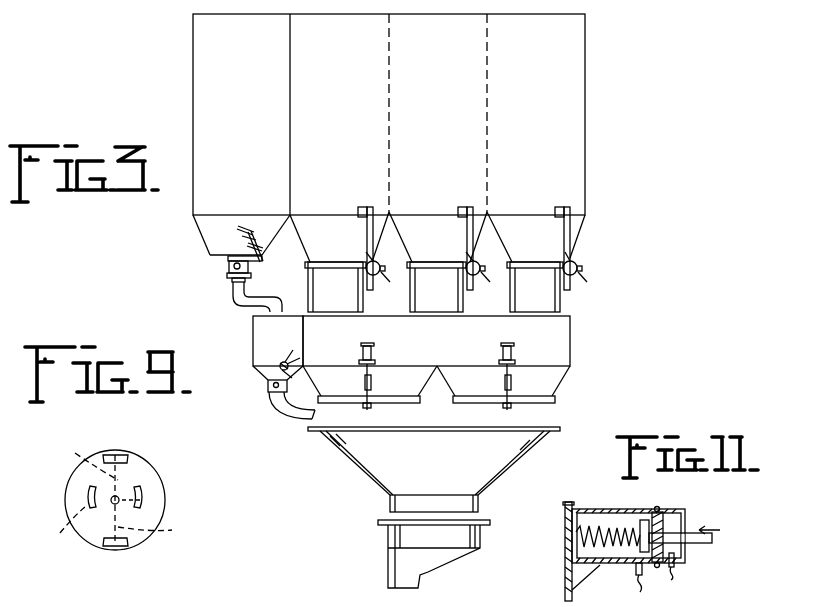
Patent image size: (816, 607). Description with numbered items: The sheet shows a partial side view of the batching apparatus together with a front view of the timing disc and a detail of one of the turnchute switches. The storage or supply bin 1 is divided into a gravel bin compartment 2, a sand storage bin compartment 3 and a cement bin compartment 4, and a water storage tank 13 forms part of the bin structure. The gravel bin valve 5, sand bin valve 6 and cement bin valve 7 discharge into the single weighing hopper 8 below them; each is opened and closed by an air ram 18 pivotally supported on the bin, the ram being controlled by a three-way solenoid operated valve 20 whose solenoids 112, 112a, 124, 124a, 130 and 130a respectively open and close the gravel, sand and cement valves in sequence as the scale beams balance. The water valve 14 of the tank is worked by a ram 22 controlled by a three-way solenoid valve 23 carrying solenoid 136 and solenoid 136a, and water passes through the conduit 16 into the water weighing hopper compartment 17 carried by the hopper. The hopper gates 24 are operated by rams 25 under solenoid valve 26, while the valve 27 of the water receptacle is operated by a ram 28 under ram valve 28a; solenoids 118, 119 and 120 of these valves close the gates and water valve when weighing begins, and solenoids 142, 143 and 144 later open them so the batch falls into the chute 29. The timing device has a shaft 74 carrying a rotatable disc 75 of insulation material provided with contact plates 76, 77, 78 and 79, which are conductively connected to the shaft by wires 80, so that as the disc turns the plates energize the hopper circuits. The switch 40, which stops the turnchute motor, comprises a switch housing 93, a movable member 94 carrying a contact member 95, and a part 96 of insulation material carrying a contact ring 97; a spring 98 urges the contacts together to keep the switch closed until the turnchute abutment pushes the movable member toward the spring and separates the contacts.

In FIG. 3, the storage or supply bin 1 is at (588, 77).
In FIG. 3, the gravel bin compartment 2 is at (536, 176).
In FIG. 3, the sand storage bin compartment 3 is at (438, 138).
In FIG. 3, the cement bin compartment 4 is at (339, 138).
In FIG. 3, the gravel bin valve 5 is at (565, 306).
In FIG. 3, the sand bin valve 6 is at (445, 306).
In FIG. 3, the cement bin valve 7 is at (330, 283).
In FIG. 3, the weighing hopper 8 is at (573, 350).
In FIG. 3, the water storage tank 13 is at (241, 173).
In FIG. 3, the water valve 14 is at (230, 271).
In FIG. 3, the conduit 16 is at (250, 302).
In FIG. 3, the water weighing hopper compartment 17 is at (260, 353).
In FIG. 3, the air ram 18 is at (367, 263).
In FIG. 3, the three-way solenoid operated valve 20 is at (494, 287).
In FIG. 3, the ram 22 is at (252, 235).
In FIG. 3, the three-way solenoid valve 23 is at (244, 243).
In FIG. 3, the gate 24 is at (392, 404).
In FIG. 3, the ram 25 is at (376, 348).
In FIG. 3, the solenoid valve 26 is at (376, 362).
In FIG. 3, the valve of the water receptacle 27 is at (271, 400).
In FIG. 3, the ram 28 is at (290, 372).
In FIG. 3, the ram valve 28a is at (284, 362).
In FIG. 3, the chute 29 is at (505, 458).
In FIG. 11, the switch 40 is at (587, 510).
In FIG. 9, the shaft 74 is at (113, 504).
In FIG. 9, the rotatable disc 75 is at (144, 458).
In FIG. 9, the contact plate 76 is at (116, 454).
In FIG. 9, the contact plate 77 is at (115, 548).
In FIG. 9, the contact plate 78 is at (142, 497).
In FIG. 9, the contact plate 79 is at (88, 496).
In FIG. 9, the wire 80 is at (113, 498).
In FIG. 11, the switch housing 93 is at (610, 511).
In FIG. 11, the movable member 94 is at (701, 544).
In FIG. 11, the contact member 95 is at (640, 553).
In FIG. 11, the part of insulation material 96 is at (665, 523).
In FIG. 11, the contact ring 97 is at (647, 520).
In FIG. 11, the spring 98 is at (592, 542).
In FIG. 3, the solenoid 112 is at (579, 268).
In FIG. 3, the solenoid 112a is at (582, 271).
In FIG. 3, the solenoid 118 is at (504, 352).
In FIG. 3, the solenoid 119 is at (364, 348).
In FIG. 3, the solenoid 120 is at (291, 358).
In FIG. 3, the solenoid 124 is at (478, 264).
In FIG. 3, the solenoid 124a is at (481, 268).
In FIG. 3, the solenoid 130 is at (380, 261).
In FIG. 3, the solenoid 130a is at (381, 268).
In FIG. 3, the solenoid 136 is at (240, 237).
In FIG. 3, the solenoid 136a is at (234, 259).
In FIG. 3, the solenoid 142 is at (505, 358).
In FIG. 3, the solenoid 143 is at (364, 358).
In FIG. 3, the solenoid 144 is at (297, 361).